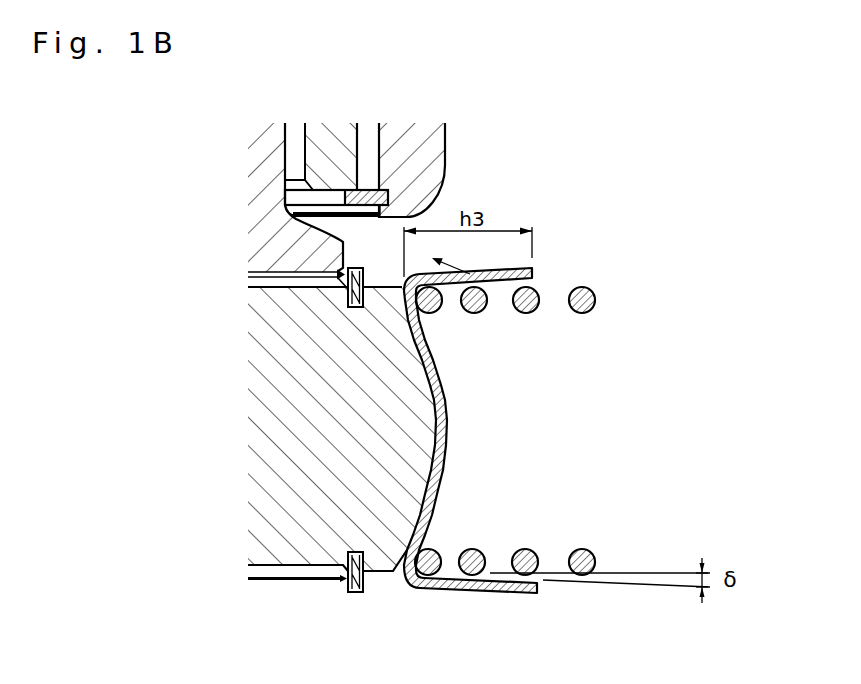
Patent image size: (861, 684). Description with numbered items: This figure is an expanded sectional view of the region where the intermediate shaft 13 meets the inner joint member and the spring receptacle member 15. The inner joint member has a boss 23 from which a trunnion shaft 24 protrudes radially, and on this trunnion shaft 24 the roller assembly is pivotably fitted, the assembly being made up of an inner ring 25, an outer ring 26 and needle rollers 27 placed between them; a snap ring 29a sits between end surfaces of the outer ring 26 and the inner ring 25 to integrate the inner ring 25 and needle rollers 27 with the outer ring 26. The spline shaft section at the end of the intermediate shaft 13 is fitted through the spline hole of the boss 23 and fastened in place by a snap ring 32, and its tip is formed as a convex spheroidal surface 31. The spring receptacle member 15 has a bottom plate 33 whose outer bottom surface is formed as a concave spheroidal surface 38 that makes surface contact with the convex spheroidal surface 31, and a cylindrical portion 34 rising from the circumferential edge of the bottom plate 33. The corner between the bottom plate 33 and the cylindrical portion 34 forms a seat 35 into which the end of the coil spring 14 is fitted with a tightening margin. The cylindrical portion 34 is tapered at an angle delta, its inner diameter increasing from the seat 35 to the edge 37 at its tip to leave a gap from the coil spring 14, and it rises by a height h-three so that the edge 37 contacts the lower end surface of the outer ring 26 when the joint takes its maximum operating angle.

The intermediate shaft 13 is at (280, 358).
The coil spring 14 is at (598, 283).
The spring receptacle member 15 is at (448, 598).
The boss 23 is at (317, 245).
The trunnion shaft 24 is at (268, 167).
The inner ring 25 is at (330, 143).
The outer ring 26 is at (423, 157).
The needle rollers 27 is at (368, 150).
The snap ring 29a is at (437, 198).
The convex spheroidal surface 31 is at (399, 358).
The snap ring 32 is at (348, 590).
The bottom plate 33 is at (442, 388).
The cylindrical portion 34 is at (522, 593).
The seat 35 is at (423, 568).
The edge 37 is at (532, 272).
The concave spheroidal surface 38 is at (432, 442).